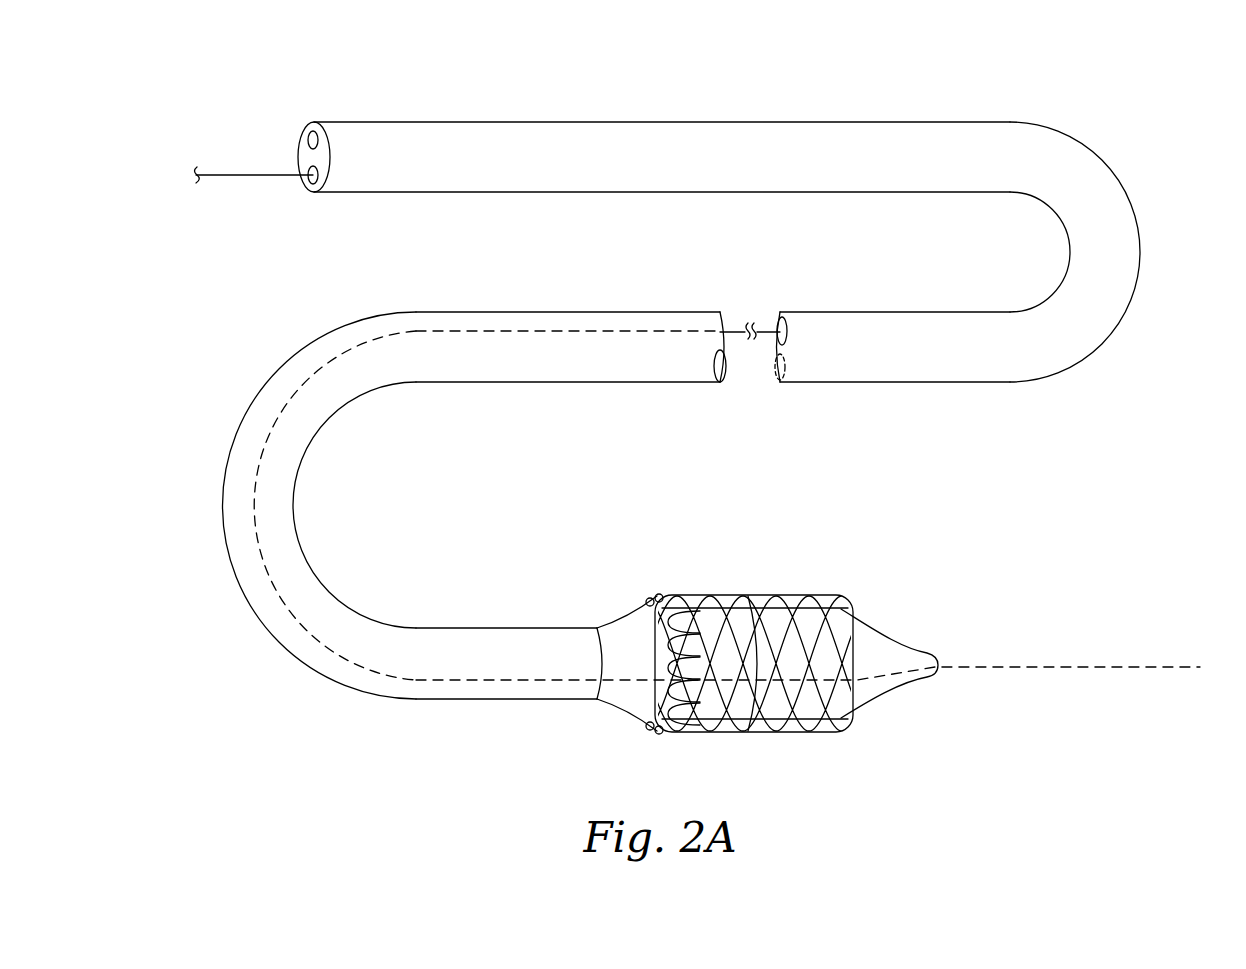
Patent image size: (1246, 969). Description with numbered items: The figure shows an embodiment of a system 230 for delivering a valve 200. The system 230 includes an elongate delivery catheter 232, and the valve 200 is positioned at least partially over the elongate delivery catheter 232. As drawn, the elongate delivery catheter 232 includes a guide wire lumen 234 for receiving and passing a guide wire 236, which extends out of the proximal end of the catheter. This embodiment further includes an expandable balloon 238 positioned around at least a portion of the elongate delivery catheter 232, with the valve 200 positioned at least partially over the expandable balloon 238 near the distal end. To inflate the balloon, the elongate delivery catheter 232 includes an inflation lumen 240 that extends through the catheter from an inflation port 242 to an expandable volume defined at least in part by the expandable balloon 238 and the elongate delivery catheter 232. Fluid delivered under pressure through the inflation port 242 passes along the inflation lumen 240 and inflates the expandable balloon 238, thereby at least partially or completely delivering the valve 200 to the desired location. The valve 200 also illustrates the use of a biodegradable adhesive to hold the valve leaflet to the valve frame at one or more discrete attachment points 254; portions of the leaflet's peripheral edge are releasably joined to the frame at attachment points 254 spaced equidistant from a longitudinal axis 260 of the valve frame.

The system 230 is at (1113, 115).
The elongate delivery catheter 232 is at (1141, 252).
The guide wire lumen 234 is at (310, 181).
The guide wire 236 is at (240, 175).
The inflation lumen 240 is at (306, 130).
The inflation port 242 is at (309, 140).
The longitudinal axis 260 is at (553, 682).
The valve 200 is at (753, 602).
The attachment points 254 is at (641, 598).
The expandable balloon 238 is at (833, 640).